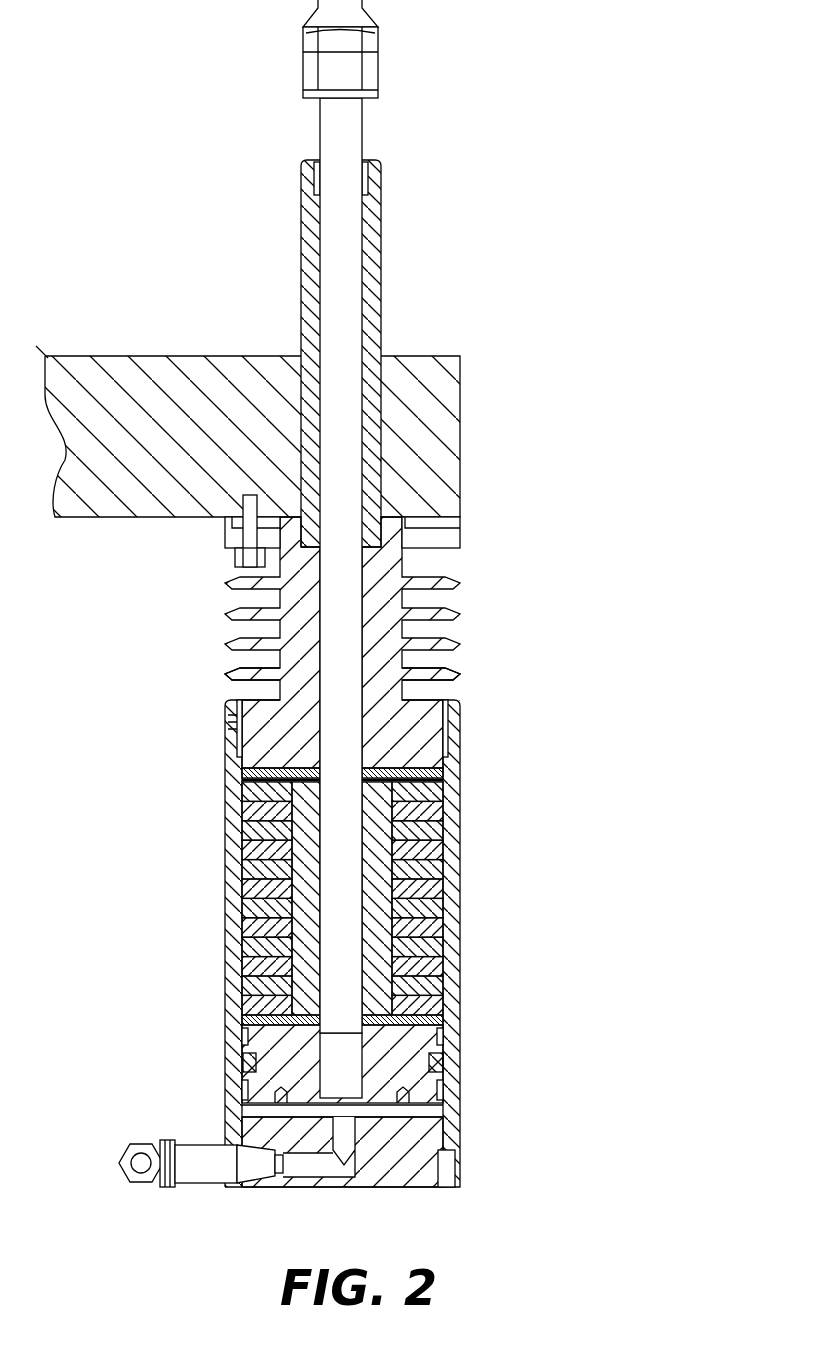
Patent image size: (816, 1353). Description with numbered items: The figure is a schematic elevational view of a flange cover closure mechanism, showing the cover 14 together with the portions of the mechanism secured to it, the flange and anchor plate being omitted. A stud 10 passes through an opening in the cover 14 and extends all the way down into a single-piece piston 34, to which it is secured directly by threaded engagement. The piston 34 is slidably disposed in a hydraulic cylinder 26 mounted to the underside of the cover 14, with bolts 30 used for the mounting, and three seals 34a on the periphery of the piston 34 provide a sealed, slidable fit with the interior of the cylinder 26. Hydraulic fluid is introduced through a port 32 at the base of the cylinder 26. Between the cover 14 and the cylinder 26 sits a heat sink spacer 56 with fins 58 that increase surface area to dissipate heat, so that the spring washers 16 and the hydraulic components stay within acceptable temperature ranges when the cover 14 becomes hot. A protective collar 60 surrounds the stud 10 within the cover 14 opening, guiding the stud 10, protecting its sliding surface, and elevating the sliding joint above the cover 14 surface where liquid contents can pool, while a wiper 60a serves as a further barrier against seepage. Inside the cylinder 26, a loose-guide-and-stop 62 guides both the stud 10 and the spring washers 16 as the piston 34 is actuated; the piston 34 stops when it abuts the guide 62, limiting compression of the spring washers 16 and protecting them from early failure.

The stud 10 is at (366, 128).
The cover 14 is at (196, 370).
The spring washers 16 is at (423, 872).
The hydraulic cylinder 26 is at (458, 987).
The bolts 30 is at (236, 557).
The port 32 is at (346, 1134).
The piston 34 is at (425, 1086).
The seals 34a is at (242, 1090).
The heat sink spacer 56 is at (462, 610).
The fins 58 is at (228, 673).
The protective collar 60 is at (379, 265).
The wiper 60a is at (380, 188).
The loose-guide-and-stop 62 is at (286, 837).